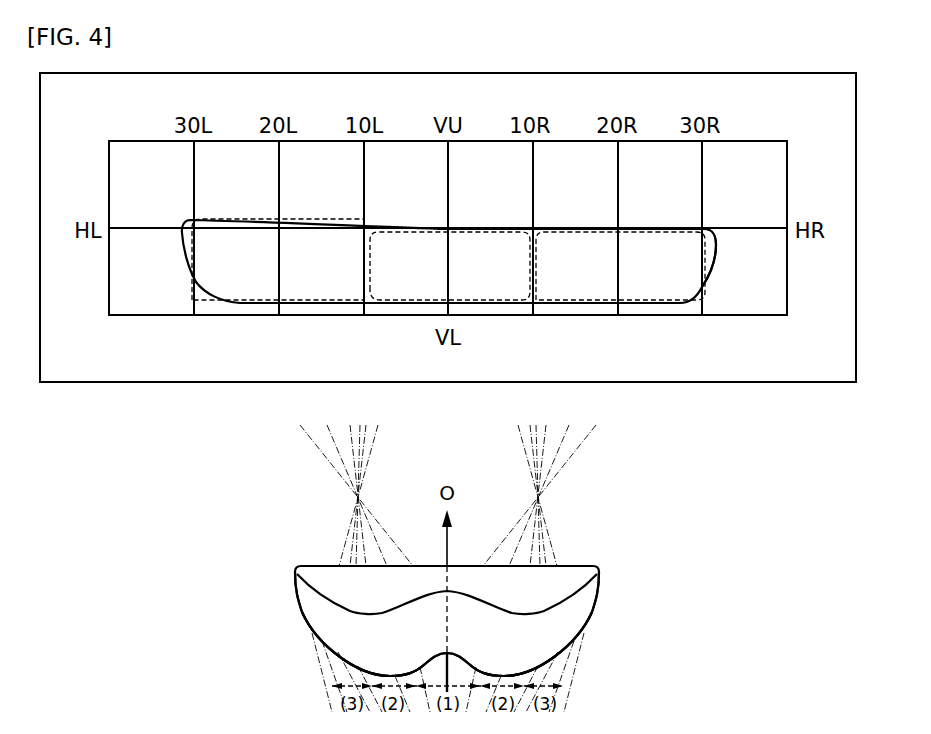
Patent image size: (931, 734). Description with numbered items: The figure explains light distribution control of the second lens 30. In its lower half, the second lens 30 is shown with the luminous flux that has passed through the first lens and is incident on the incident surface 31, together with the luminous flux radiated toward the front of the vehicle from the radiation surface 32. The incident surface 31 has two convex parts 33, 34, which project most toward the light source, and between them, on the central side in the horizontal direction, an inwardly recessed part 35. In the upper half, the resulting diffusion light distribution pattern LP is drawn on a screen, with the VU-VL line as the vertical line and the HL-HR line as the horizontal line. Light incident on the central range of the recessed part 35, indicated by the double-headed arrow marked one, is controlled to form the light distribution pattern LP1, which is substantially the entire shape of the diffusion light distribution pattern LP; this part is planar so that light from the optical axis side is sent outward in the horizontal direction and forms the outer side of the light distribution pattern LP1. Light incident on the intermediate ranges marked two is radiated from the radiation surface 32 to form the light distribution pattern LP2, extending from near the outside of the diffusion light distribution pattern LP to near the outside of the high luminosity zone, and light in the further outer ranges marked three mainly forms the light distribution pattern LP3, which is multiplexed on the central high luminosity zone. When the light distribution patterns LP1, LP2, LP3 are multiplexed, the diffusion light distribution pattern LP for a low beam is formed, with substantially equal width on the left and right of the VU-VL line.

The diffusion light distribution pattern LP is at (556, 214).
The light distribution pattern LP1 is at (712, 300).
The light distribution pattern LP2 is at (227, 316).
The light distribution pattern LP3 is at (392, 305).
The second lens 30 is at (627, 580).
The incident surface 31 is at (603, 636).
The radiation surface 32 is at (513, 549).
The convex part 33 is at (353, 655).
The convex part 34 is at (525, 658).
The recessed part 35 is at (438, 615).